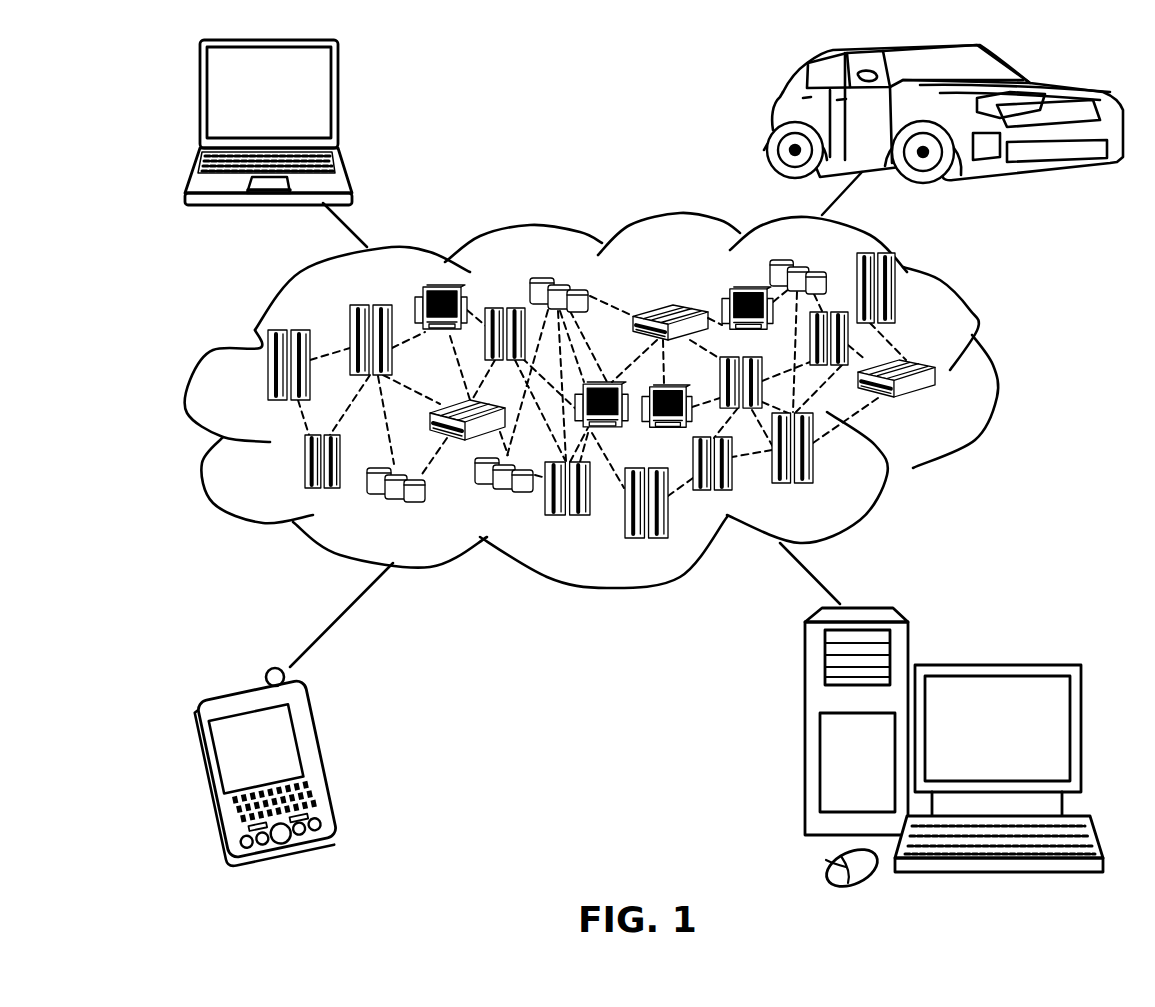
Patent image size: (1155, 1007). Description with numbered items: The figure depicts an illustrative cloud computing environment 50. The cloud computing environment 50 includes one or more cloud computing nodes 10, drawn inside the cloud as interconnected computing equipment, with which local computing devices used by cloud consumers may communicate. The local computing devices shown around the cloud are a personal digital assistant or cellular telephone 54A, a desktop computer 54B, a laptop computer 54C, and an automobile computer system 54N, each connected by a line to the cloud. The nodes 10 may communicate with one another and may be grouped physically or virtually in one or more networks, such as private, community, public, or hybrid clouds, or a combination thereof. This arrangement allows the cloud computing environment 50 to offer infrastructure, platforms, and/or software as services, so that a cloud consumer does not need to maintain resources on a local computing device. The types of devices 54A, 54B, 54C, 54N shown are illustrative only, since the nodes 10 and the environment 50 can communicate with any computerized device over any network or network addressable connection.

The cloud computing node 10 is at (620, 400).
The cloud computing environment 50 is at (995, 377).
The personal digital assistant or cellular telephone 54A is at (330, 757).
The desktop computer 54B is at (996, 665).
The laptop computer 54C is at (338, 100).
The automobile computer system 54N is at (773, 118).